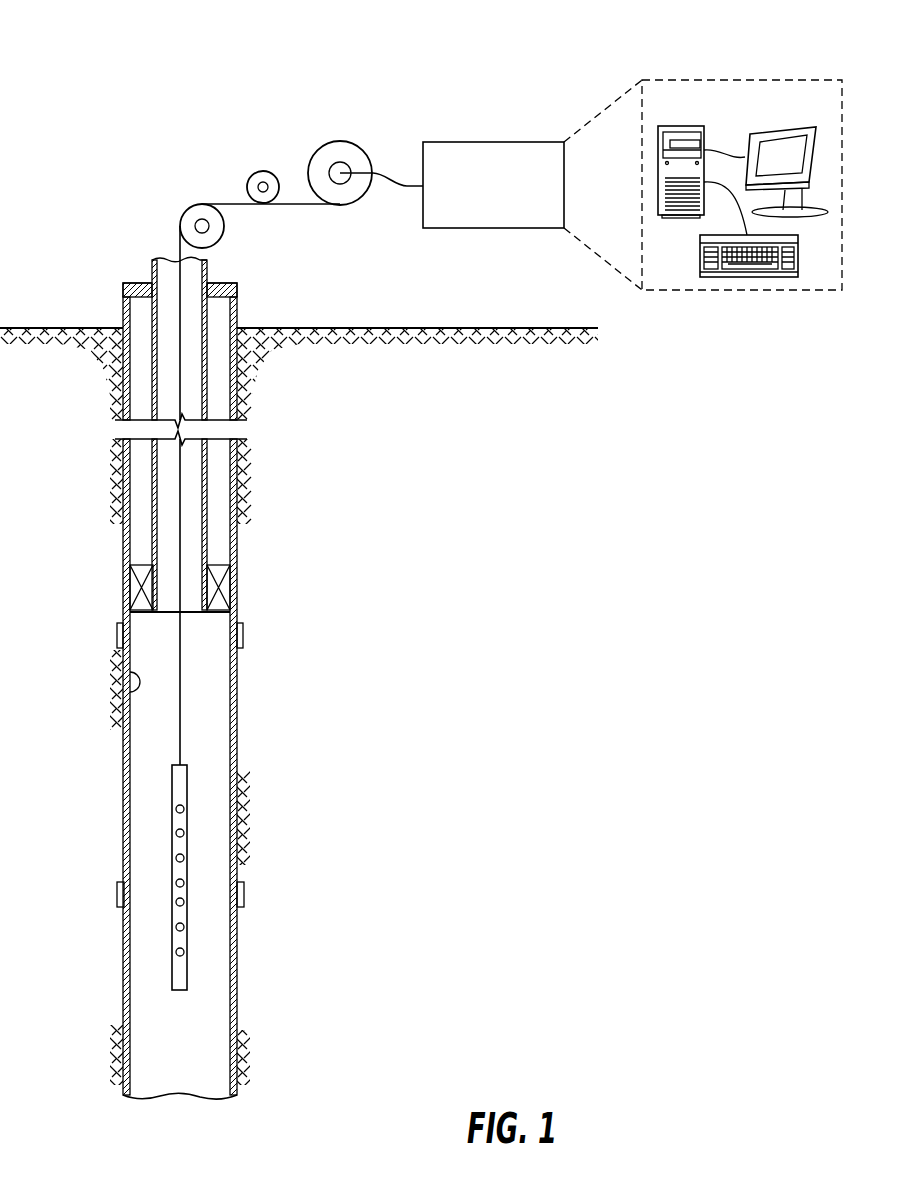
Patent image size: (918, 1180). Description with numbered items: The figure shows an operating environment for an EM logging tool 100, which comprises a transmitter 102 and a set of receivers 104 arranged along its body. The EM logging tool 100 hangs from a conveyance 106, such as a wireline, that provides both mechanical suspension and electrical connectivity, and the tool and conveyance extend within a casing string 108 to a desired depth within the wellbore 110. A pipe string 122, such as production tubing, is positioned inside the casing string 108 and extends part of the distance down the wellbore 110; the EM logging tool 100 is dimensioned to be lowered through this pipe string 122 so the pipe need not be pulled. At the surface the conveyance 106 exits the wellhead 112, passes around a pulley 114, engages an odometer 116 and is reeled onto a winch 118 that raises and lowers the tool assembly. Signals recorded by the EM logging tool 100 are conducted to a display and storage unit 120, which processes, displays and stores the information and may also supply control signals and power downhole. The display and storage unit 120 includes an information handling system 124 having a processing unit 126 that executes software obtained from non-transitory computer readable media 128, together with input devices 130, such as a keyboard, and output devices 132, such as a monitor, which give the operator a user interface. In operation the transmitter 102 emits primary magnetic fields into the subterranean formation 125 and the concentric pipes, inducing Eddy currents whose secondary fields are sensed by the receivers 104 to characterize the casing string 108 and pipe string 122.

The EM logging tool 100 is at (187, 778).
The transmitter 102 is at (184, 808).
The receivers 104 is at (184, 833).
The conveyance 106 is at (182, 730).
The casing string 108 is at (125, 700).
The wellbore 110 is at (255, 1032).
The wellhead 112 is at (237, 307).
The pulley 114 is at (192, 206).
The odometer 116 is at (263, 171).
The winch 118 is at (353, 141).
The display and storage unit 120 is at (493, 142).
The pipe string 122 is at (207, 550).
The information handling system 124 is at (690, 78).
The subterranean formation 125 is at (528, 448).
The processing unit 126 is at (677, 218).
The non-transitory computer readable media 128 is at (670, 127).
The input device(s) 130 is at (760, 277).
The output device(s) 132 is at (797, 128).